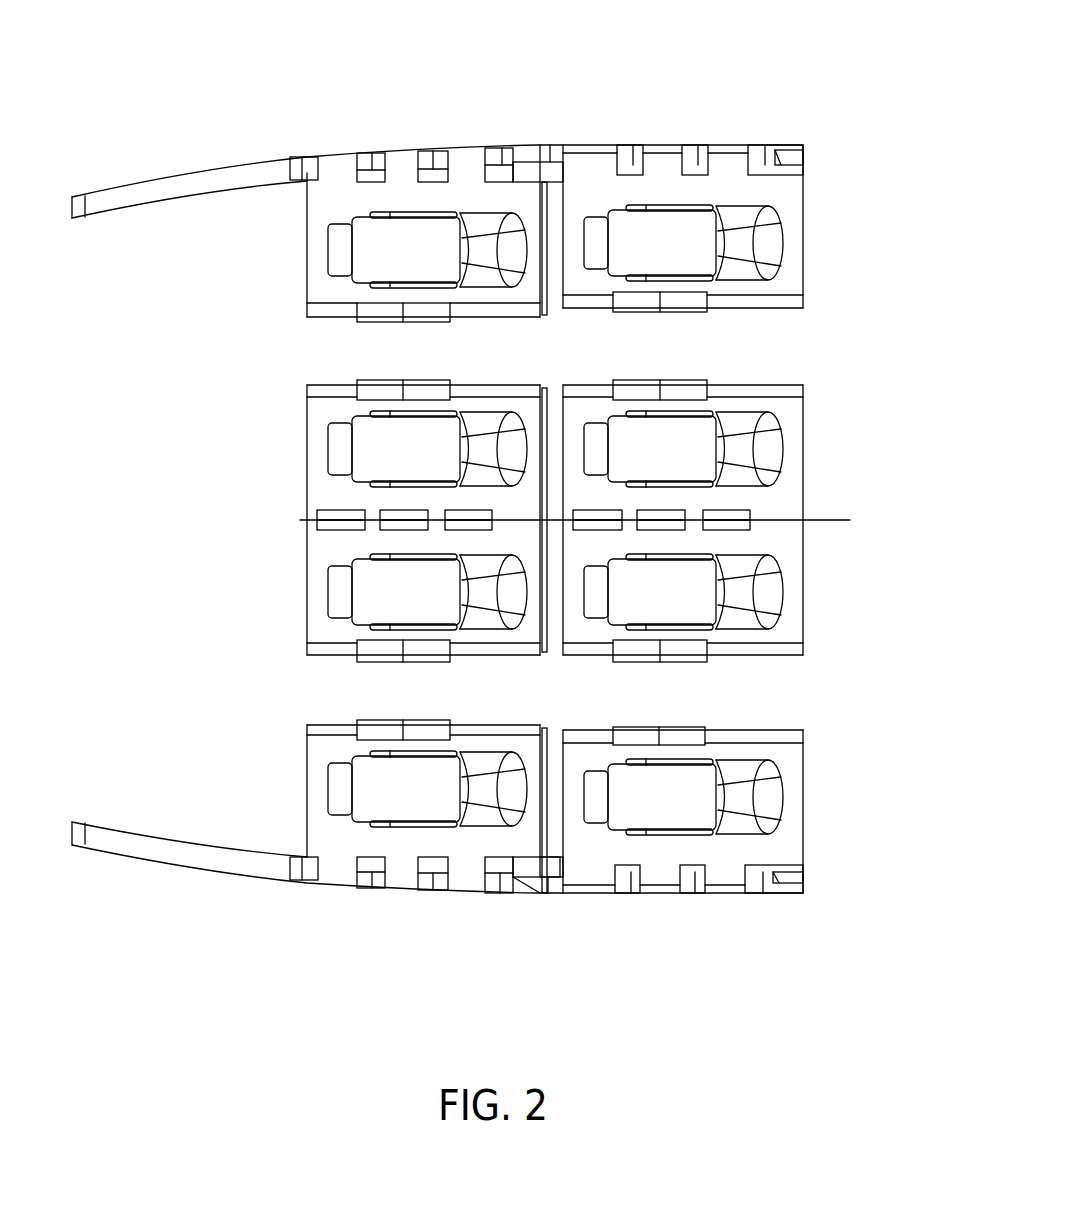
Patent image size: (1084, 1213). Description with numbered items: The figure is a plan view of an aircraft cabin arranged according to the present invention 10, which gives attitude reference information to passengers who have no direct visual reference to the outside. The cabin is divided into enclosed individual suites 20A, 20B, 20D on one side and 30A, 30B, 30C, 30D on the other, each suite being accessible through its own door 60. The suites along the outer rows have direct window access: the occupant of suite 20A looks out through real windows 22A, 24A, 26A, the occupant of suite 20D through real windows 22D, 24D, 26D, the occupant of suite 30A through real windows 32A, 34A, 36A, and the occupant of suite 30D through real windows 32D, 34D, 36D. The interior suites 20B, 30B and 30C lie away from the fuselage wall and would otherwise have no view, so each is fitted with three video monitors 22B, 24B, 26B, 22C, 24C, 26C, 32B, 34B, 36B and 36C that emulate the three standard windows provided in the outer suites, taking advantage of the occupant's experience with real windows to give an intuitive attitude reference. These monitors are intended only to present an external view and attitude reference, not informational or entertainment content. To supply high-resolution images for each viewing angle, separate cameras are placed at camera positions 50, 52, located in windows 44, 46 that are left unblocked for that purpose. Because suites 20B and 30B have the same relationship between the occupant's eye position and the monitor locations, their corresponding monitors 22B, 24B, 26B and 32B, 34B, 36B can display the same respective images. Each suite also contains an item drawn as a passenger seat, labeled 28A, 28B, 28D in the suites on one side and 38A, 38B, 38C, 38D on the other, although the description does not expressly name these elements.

The present invention 10 is at (130, 76).
The enclosed individual suite 20A is at (270, 785).
The enclosed individual suite 20B is at (272, 626).
The enclosed individual suite 20D is at (272, 270).
The window 22A is at (337, 888).
The video monitor 22B is at (335, 530).
The video monitor 22C is at (335, 510).
The window 22D is at (340, 152).
The window 24A is at (407, 890).
The video monitor 24B is at (405, 530).
The video monitor 24C is at (405, 510).
The window 24D is at (406, 148).
The window 26A is at (470, 893).
The video monitor 26B is at (470, 530).
The video monitor 26C is at (437, 510).
The window 26D is at (465, 150).
The passenger seat 28A is at (378, 806).
The passenger seat 28B is at (370, 595).
The passenger seat 28D is at (330, 230).
The enclosed individual suite 30A is at (826, 800).
The enclosed individual suite 30B is at (810, 666).
The enclosed individual suite 30C is at (834, 384).
The enclosed individual suite 30D is at (822, 228).
The window 32A is at (603, 893).
The video monitor 32B is at (740, 508).
The window 32D is at (600, 145).
The window 34A is at (667, 895).
The video monitor 34B is at (680, 508).
The window 34D is at (667, 145).
The window 36A is at (728, 895).
The video monitor 36B is at (610, 532).
The video monitor 36C is at (610, 508).
The window 36D is at (725, 145).
The passenger seat 38A is at (694, 817).
The passenger seat 38B is at (698, 612).
The passenger seat 38C is at (703, 428).
The passenger seat 38D is at (700, 265).
The unblocked window 44 is at (532, 115).
The unblocked window 46 is at (523, 890).
The camera position 50 is at (563, 168).
The camera position 52 is at (572, 878).
The door 60 is at (420, 322).